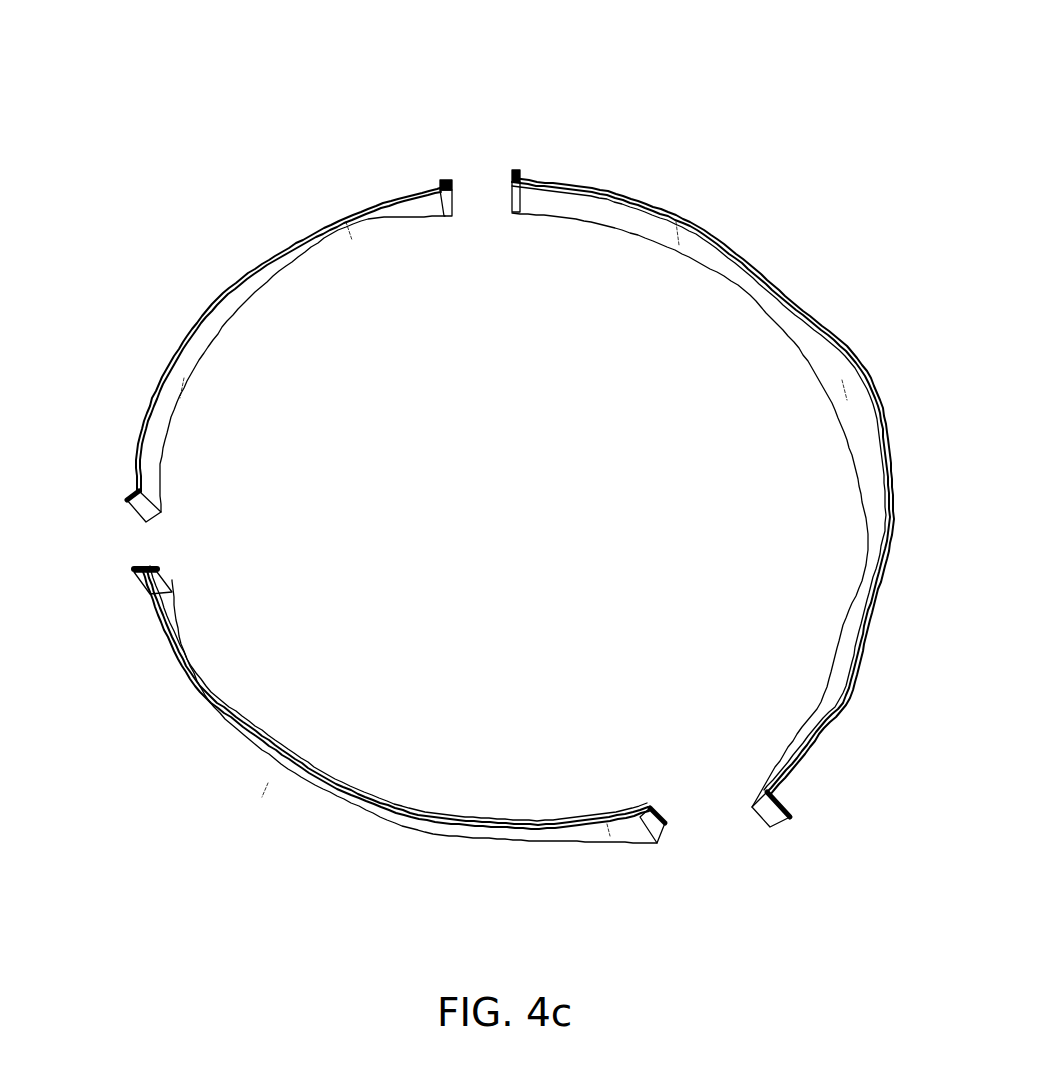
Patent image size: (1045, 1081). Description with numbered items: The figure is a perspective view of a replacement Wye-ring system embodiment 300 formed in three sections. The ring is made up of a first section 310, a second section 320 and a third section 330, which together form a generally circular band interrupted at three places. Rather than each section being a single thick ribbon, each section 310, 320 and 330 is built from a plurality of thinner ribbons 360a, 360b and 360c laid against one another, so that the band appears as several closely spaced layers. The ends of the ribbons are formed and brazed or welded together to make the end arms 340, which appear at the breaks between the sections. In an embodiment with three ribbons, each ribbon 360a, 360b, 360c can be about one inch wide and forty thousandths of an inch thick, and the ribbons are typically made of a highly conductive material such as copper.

The embodiment 300 is at (235, 74).
The section 310 is at (217, 299).
The section 320 is at (330, 790).
The section 330 is at (870, 408).
The end arms 340 is at (513, 170).
The ribbon 360a is at (386, 205).
The ribbon 360b is at (363, 222).
The ribbon 360c is at (363, 208).